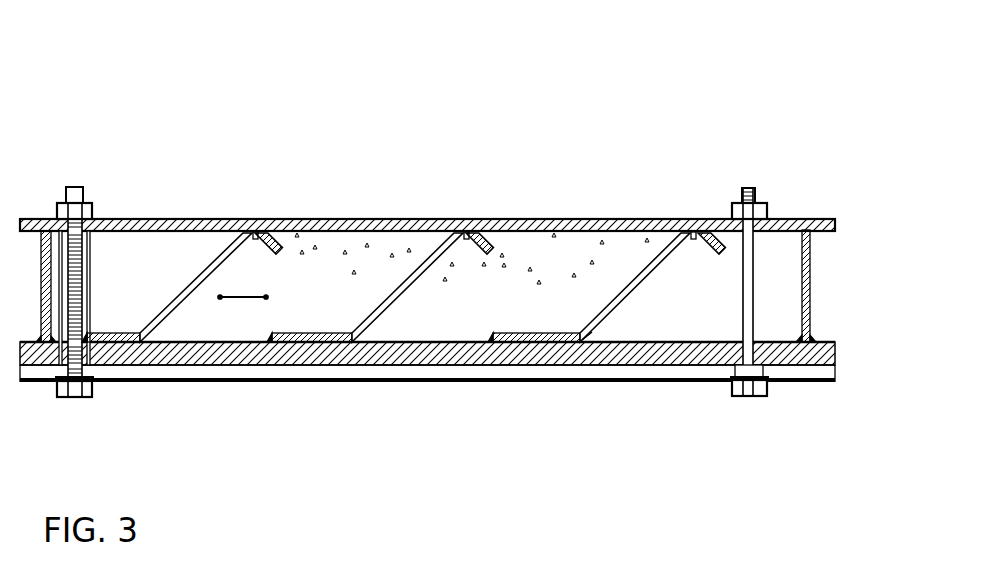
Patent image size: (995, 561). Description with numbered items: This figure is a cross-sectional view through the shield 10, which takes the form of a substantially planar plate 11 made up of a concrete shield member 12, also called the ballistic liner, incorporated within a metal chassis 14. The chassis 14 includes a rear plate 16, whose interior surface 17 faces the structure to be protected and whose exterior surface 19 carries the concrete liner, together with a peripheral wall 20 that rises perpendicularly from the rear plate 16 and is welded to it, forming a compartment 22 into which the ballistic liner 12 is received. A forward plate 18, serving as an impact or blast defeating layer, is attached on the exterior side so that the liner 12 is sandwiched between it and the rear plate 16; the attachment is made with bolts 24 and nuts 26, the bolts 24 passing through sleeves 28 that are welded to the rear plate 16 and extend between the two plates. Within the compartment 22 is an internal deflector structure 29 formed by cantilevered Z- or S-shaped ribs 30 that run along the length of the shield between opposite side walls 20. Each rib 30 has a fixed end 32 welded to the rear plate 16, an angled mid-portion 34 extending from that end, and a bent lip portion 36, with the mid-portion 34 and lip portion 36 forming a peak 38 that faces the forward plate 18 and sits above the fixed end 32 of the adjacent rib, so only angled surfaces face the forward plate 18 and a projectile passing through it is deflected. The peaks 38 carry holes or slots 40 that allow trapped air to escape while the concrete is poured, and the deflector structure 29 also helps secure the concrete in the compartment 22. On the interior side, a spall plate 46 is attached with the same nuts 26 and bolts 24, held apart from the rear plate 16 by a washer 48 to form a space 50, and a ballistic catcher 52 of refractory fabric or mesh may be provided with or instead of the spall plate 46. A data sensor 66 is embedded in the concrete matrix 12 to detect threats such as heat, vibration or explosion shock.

The shield 10 is at (455, 242).
The substantially planar plate 11 is at (238, 95).
The shield member 12 is at (390, 236).
The chassis 14 is at (38, 355).
The rear plate 16 is at (263, 363).
The interior surface 17 is at (128, 368).
The forward plate 18 is at (260, 218).
The exterior surface 19 is at (657, 337).
The peripheral wall 20 is at (817, 308).
The compartment 22 is at (625, 320).
The bolt 24 is at (95, 218).
The nut 26 is at (88, 203).
The sleeve 28 is at (90, 253).
The internal deflector structure 29 is at (490, 233).
The projectile deflecting rib 30 is at (417, 298).
The fixed end 32 is at (308, 348).
The mid-portion 34 is at (652, 242).
The bent lip portion 36 is at (712, 230).
The peak 38 is at (692, 217).
The holes or slots 40 is at (463, 218).
The spall plate 46 is at (432, 380).
The washer 48 is at (727, 380).
The space 50 is at (477, 370).
The ballistic catcher 52 is at (548, 372).
The data sensor 66 is at (240, 302).